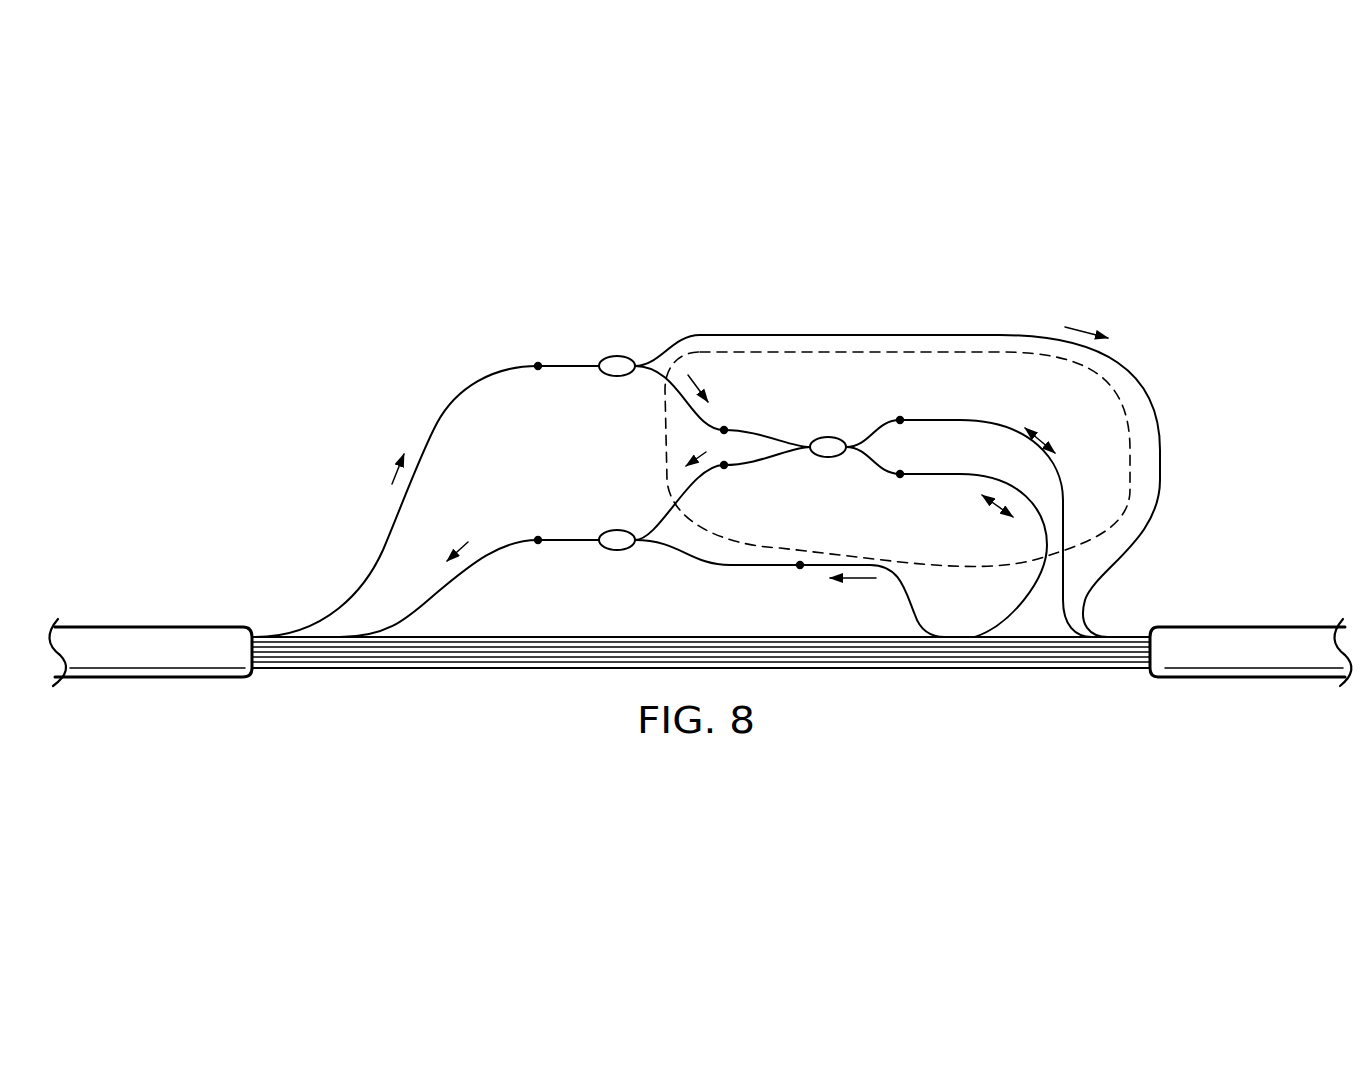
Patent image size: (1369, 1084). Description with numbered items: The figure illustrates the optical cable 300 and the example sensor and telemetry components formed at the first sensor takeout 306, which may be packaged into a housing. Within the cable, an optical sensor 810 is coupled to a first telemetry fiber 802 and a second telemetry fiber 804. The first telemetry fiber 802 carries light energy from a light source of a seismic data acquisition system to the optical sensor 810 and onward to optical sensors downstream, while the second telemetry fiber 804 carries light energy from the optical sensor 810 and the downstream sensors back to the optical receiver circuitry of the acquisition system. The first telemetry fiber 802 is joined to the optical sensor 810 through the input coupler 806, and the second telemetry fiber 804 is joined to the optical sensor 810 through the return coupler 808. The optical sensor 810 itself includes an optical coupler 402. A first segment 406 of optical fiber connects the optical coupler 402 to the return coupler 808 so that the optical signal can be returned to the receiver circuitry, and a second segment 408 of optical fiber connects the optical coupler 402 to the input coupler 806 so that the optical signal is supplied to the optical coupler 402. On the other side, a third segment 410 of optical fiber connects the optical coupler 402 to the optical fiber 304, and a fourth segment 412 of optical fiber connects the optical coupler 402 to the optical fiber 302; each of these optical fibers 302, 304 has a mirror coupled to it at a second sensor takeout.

The optical cable 300 is at (138, 566).
The optical fiber 302 is at (1067, 498).
The optical fiber 304 is at (1038, 525).
The first sensor takeout 306 is at (480, 702).
The optical coupler 402 is at (840, 456).
The first segment of optical fiber 406 is at (745, 467).
The second segment of optical fiber 408 is at (745, 430).
The third segment of optical fiber 410 is at (878, 468).
The fourth segment of optical fiber 412 is at (870, 430).
The first telemetry fiber 802 is at (450, 408).
The second telemetry fiber 804 is at (463, 567).
The input coupler 806 is at (617, 356).
The return coupler 808 is at (617, 530).
The optical sensor 810 is at (1137, 441).